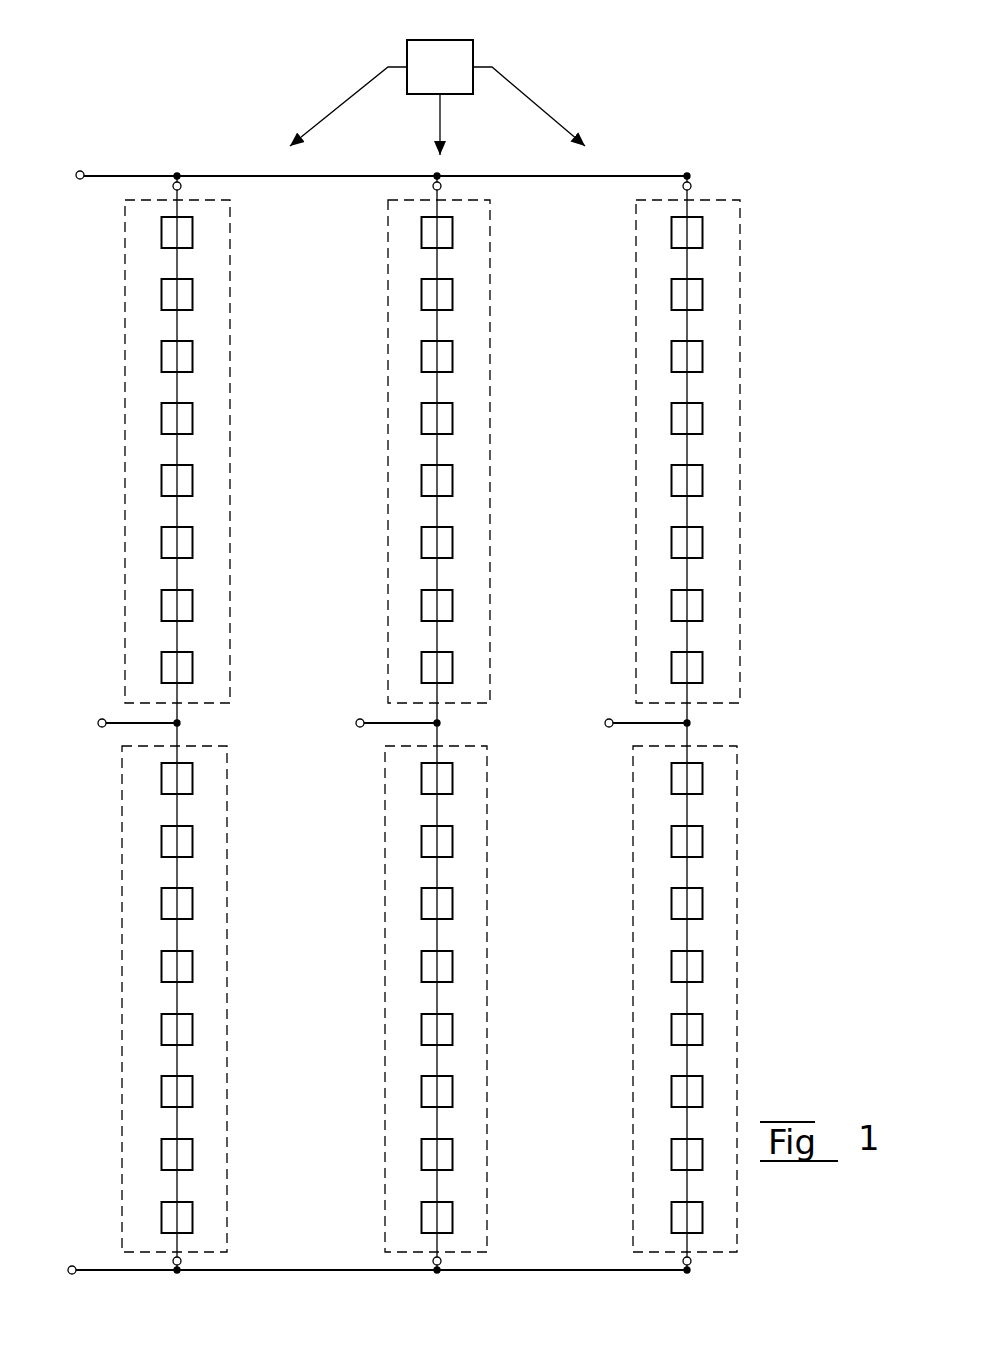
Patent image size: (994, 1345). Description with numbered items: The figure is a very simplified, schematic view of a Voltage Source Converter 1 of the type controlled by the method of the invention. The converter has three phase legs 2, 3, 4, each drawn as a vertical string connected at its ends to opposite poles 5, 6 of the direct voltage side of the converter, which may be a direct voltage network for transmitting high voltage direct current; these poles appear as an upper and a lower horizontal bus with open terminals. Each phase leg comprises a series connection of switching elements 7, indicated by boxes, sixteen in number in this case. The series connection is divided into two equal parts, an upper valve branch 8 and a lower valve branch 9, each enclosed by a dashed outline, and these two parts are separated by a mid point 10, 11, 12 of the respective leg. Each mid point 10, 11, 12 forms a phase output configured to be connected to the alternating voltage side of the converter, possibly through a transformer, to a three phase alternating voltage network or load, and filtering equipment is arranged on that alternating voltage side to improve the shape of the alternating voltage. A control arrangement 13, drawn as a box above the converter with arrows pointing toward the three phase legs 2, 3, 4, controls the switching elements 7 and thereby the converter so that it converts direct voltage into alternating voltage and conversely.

The Voltage Source Converter 1 is at (608, 170).
The phase leg 2 is at (210, 702).
The phase leg 3 is at (463, 190).
The phase leg 4 is at (655, 190).
The pole 5 is at (97, 172).
The pole 6 is at (88, 1268).
The switching element 7 is at (198, 232).
The upper valve branch 8 is at (211, 451).
The lower valve branch 9 is at (225, 940).
The mid point 10 is at (118, 722).
The mid point 11 is at (378, 722).
The mid point 12 is at (615, 722).
The control arrangement 13 is at (473, 50).